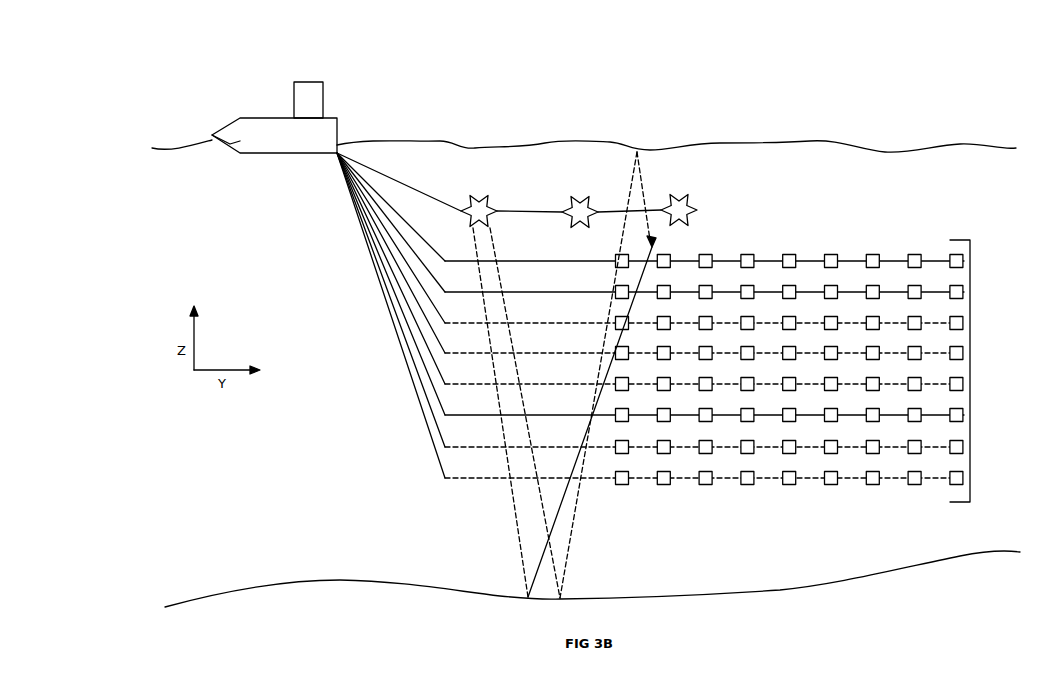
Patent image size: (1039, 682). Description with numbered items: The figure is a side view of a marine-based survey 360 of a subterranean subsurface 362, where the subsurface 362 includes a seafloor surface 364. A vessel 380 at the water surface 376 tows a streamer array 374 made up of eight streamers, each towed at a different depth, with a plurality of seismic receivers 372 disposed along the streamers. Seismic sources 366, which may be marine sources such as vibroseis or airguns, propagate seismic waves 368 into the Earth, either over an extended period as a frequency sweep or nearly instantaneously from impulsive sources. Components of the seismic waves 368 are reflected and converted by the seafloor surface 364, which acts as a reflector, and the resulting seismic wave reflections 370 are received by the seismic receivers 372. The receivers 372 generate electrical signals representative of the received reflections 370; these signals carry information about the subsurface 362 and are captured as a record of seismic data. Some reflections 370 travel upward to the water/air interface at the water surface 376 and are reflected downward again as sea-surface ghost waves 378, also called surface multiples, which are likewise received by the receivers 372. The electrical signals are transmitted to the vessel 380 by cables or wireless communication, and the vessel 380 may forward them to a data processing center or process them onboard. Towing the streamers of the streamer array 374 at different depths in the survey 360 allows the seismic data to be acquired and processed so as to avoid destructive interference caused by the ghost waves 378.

The marine-based survey 360 is at (198, 66).
The subterranean subsurface 362 is at (290, 635).
The seafloor surface 364 is at (850, 578).
The seismic sources 366 is at (498, 213).
The seismic waves 368 is at (500, 286).
The seismic wave reflections 370 is at (604, 346).
The seismic receivers 372 is at (912, 252).
The streamer array 374 is at (972, 368).
The water surface 376 is at (818, 140).
The sea-surface ghost waves 378 is at (642, 175).
The vessel 380 is at (305, 82).